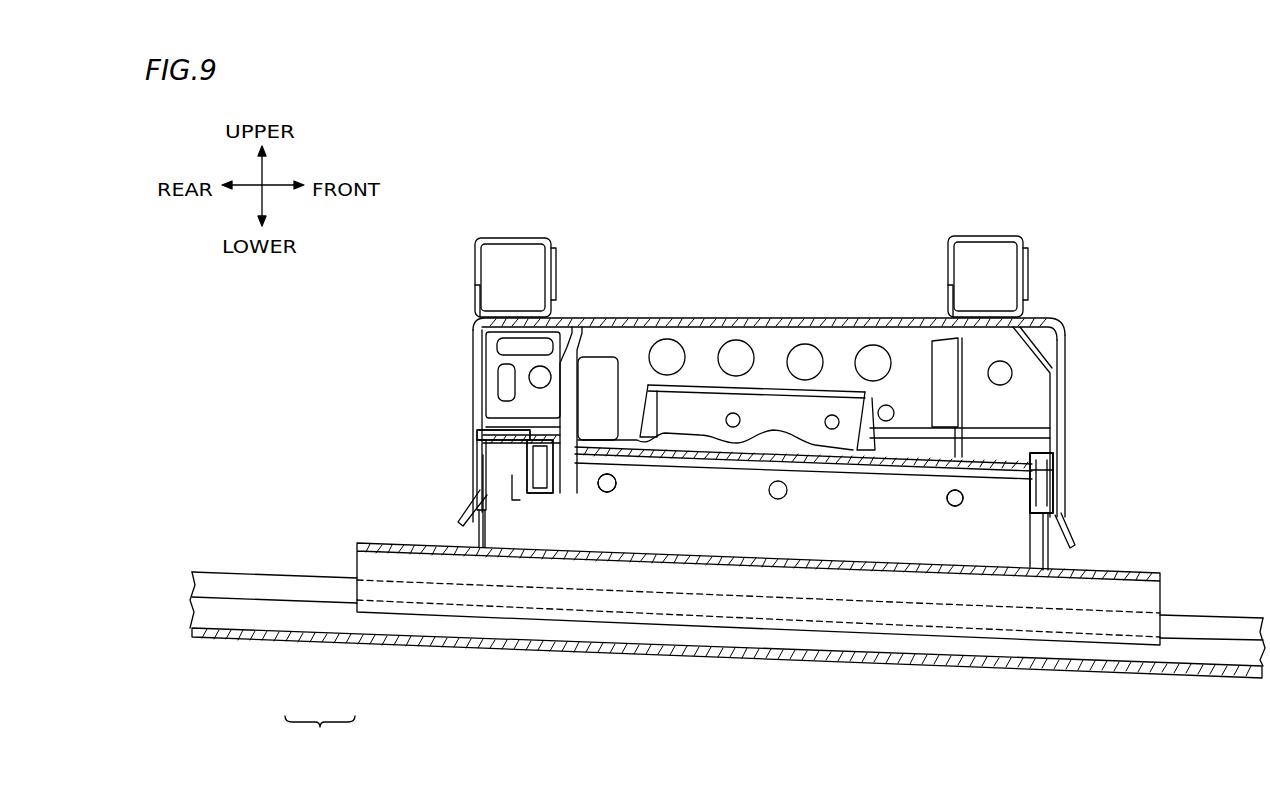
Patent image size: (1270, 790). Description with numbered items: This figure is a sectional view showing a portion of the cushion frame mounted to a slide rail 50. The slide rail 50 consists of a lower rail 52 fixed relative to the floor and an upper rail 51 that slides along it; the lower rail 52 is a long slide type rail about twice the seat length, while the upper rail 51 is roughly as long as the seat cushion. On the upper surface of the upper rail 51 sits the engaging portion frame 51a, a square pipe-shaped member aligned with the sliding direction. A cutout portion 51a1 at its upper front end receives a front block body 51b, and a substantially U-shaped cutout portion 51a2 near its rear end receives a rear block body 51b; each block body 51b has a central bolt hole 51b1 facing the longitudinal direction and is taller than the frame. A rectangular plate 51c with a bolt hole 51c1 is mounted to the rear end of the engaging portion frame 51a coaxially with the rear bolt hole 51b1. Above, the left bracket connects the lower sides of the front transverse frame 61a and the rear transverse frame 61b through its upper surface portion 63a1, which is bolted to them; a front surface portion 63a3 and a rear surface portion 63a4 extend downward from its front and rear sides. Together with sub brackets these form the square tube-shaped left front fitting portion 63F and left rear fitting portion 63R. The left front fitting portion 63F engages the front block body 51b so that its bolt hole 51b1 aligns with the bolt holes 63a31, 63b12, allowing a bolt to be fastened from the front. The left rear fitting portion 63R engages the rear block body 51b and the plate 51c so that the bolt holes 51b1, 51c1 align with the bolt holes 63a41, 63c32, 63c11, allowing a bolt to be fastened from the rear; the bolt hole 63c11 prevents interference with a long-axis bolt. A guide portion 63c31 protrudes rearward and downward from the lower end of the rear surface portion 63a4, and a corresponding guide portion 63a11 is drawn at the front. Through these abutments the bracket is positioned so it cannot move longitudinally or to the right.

The rear transverse frame 61b is at (512, 237).
The front transverse frame 61a is at (988, 236).
The upper surface portion 63a1 is at (740, 318).
The left rear fitting portion 63R is at (452, 352).
The left front fitting portion 63F is at (1073, 363).
The rear surface portion 63a4 is at (472, 386).
The front surface portion 63a3 is at (1068, 398).
The bolt hole 63a41 is at (478, 455).
The bolt hole 63c32 is at (478, 455).
The bolt hole 51c1 is at (465, 466).
The guide portion 63c31 is at (456, 511).
The bolt hole 63c11 is at (583, 476).
The bolt hole 63a31 is at (1063, 486).
The bolt hole 63b12 is at (1063, 486).
The front hook tab 63a11 is at (1078, 540).
The engaging portion frame 51a is at (810, 530).
The bolt hole 51b1 is at (1028, 486).
The block body 51b is at (1047, 512).
The plate 51c is at (440, 548).
The cutout portion 51a2 is at (528, 485).
The cutout portion 51a1 is at (1025, 488).
The upper rail 51 is at (362, 605).
The lower rail 52 is at (305, 615).
The slide rail 50 is at (320, 736).